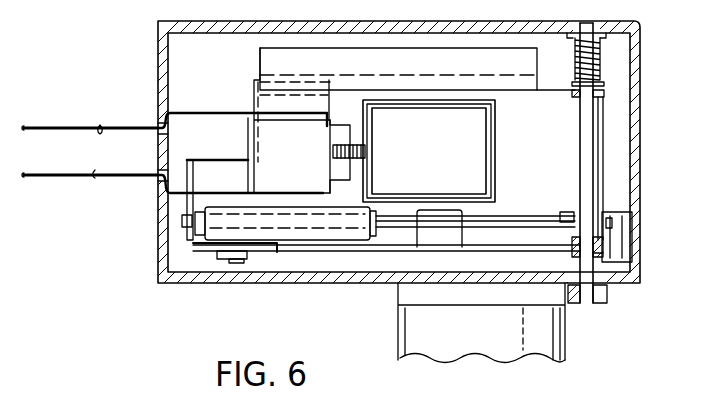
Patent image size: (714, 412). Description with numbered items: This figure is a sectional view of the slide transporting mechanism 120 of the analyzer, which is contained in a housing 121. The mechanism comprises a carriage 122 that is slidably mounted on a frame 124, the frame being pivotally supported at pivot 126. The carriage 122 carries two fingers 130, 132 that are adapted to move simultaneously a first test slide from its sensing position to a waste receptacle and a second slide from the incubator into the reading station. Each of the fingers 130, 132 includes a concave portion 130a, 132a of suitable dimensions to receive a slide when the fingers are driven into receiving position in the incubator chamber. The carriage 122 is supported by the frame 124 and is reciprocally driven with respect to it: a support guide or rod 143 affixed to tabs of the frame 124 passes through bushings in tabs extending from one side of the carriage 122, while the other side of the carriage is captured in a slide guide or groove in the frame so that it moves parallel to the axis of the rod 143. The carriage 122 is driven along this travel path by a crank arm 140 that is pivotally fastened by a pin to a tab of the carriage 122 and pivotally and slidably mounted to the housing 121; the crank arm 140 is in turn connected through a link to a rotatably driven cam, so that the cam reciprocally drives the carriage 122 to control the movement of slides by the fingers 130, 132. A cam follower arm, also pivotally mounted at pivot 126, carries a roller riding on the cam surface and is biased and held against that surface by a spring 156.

The slide transporting mechanism 120 is at (141, 216).
The housing 121 is at (641, 94).
The carriage 122 is at (302, 205).
The frame 124 is at (557, 149).
The pivot 126 is at (585, 303).
The finger 130 is at (66, 178).
The concave portion 130a is at (97, 175).
The finger 132 is at (66, 125).
The concave portion 132a is at (101, 130).
The crank arm 140 is at (208, 246).
The support guide or rod 143 is at (522, 221).
The spring 156 is at (618, 213).